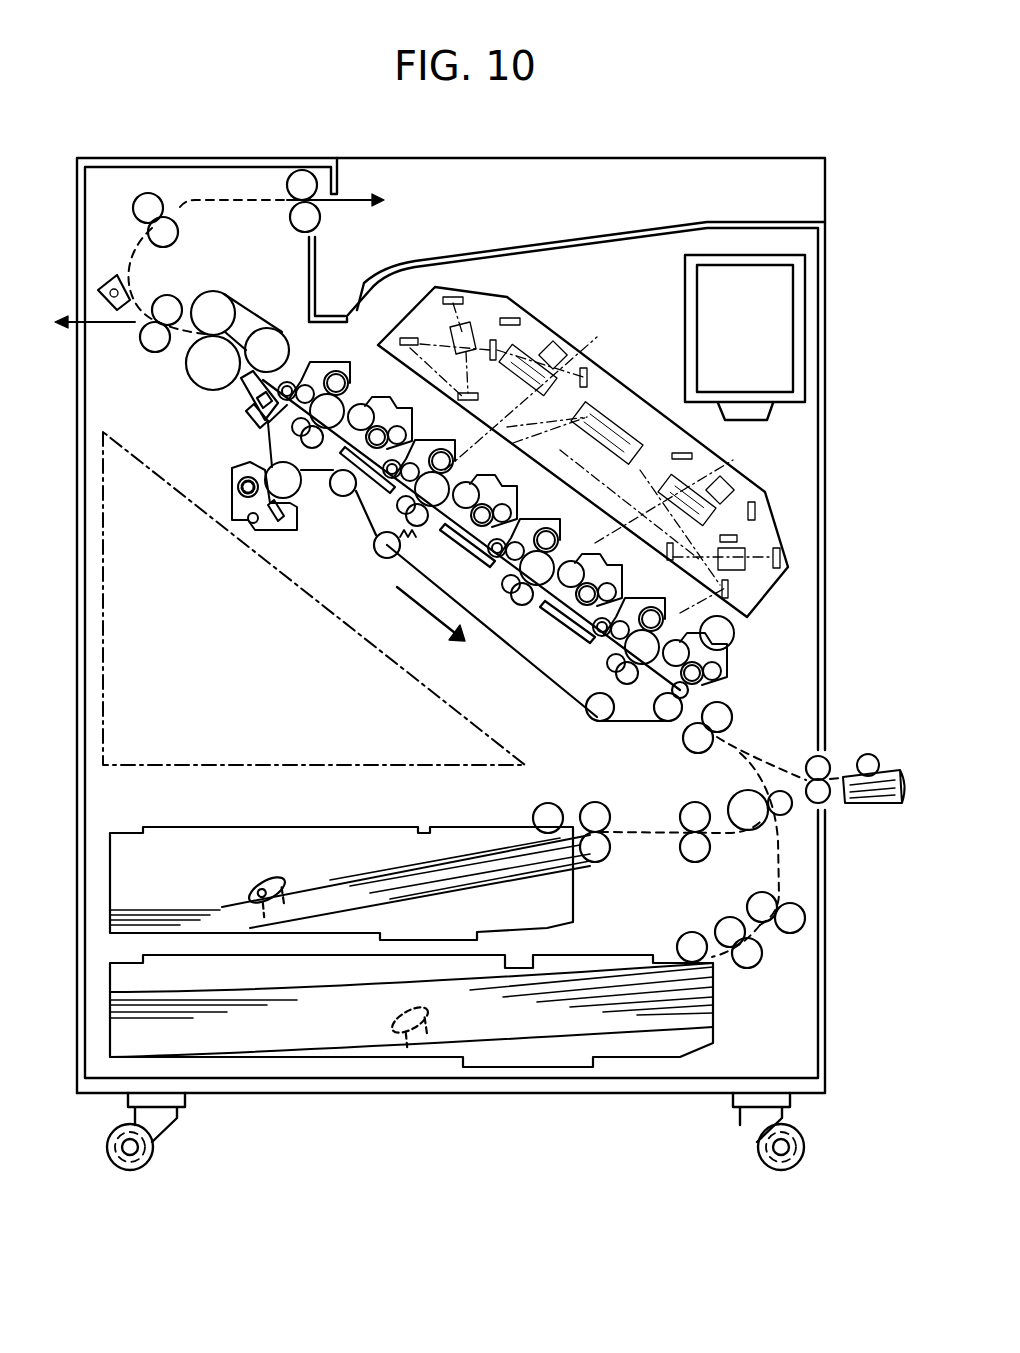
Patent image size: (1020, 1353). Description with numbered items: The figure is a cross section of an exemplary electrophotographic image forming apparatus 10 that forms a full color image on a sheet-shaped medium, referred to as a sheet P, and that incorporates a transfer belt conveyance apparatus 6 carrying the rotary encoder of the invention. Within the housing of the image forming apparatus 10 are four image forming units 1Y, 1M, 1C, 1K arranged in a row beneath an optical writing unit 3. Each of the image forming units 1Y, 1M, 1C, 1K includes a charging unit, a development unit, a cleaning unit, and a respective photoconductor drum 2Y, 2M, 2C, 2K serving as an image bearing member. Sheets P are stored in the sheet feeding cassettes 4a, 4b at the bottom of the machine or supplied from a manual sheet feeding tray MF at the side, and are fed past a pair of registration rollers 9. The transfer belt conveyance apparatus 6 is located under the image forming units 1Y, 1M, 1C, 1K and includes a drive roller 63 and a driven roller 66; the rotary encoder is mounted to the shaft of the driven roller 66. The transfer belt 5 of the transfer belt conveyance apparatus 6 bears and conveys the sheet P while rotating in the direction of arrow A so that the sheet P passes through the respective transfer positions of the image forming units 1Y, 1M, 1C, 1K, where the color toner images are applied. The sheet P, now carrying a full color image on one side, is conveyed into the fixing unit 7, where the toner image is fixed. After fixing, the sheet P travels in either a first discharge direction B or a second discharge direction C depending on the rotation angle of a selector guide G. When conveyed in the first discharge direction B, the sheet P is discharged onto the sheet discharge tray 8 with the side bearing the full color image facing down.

The image forming apparatus 10 is at (848, 550).
The optical writing unit 3 is at (625, 384).
The transfer belt 5 is at (534, 678).
The transfer belt conveyance apparatus 6 is at (500, 667).
The fixing unit 7 is at (262, 310).
The sheet discharge tray 8 is at (514, 248).
The pair of registration rollers 9 is at (730, 706).
The drive roller 63 is at (262, 465).
The driven roller 66 is at (600, 722).
The sheet feeding cassette 4a is at (110, 898).
The sheet feeding cassette 4b is at (110, 1024).
The image forming unit 1K is at (345, 388).
The image forming unit 1C is at (450, 466).
The image forming unit 1M is at (556, 545).
The image forming unit 1Y is at (659, 624).
The photoconductor drum 2K is at (345, 391).
The photoconductor drum 2C is at (450, 469).
The photoconductor drum 2M is at (555, 548).
The photoconductor drum 2Y is at (660, 627).
The sheet P is at (893, 768).
The manual sheet feeding tray MF is at (878, 806).
The arrow A is at (415, 612).
The first discharge direction B is at (322, 203).
The second discharge direction C is at (113, 326).
The selector guide G is at (113, 282).